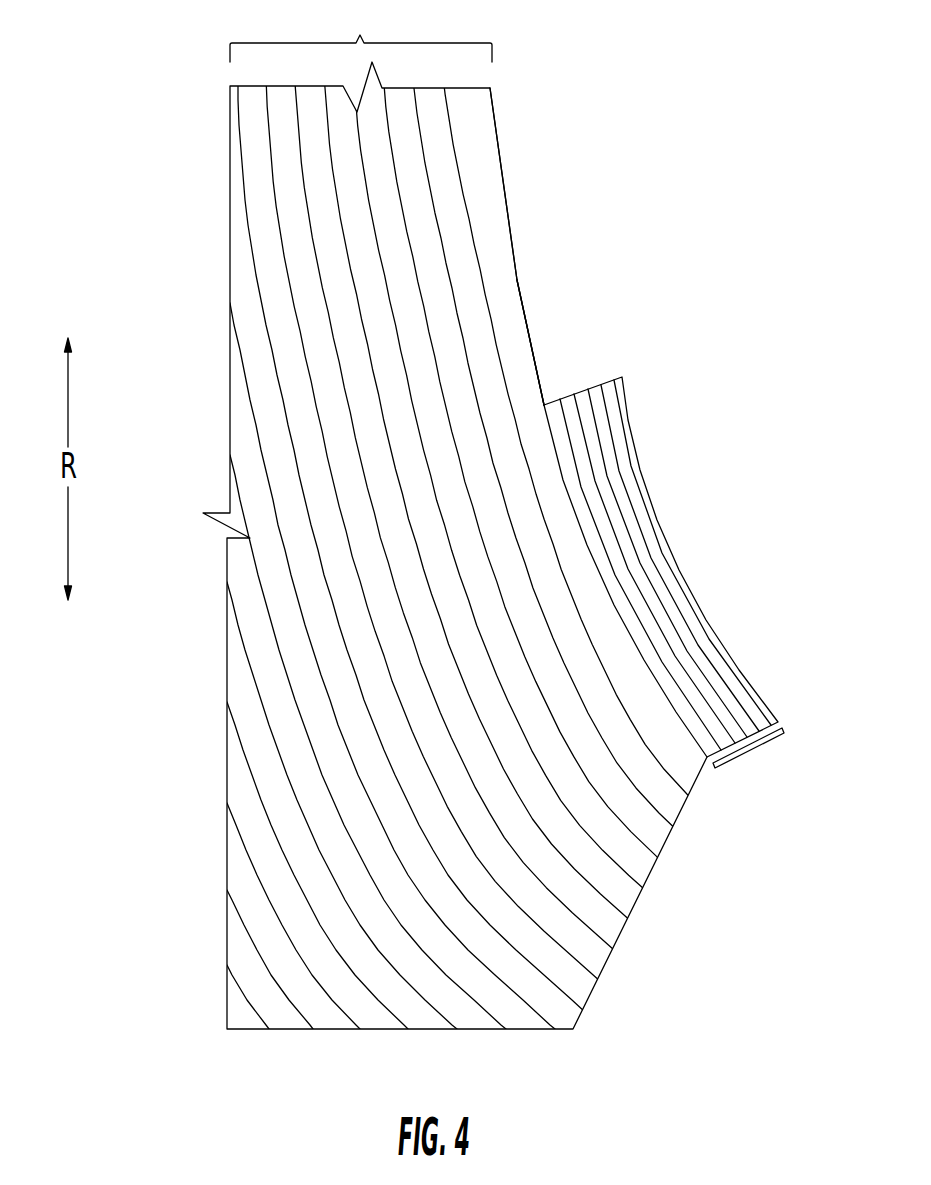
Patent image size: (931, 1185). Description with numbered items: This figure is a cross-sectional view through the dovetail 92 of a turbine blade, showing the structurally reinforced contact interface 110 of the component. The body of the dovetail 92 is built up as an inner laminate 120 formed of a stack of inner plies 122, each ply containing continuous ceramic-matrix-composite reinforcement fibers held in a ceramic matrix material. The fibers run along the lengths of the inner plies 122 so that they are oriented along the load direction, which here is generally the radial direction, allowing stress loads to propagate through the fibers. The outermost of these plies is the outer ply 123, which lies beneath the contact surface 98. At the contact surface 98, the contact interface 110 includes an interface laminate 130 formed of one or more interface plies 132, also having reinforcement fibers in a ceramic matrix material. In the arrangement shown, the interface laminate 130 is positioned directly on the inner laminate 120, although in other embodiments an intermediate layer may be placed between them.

The dovetail 92 is at (216, 228).
The inner laminate 120 is at (361, 31).
The inner plies 122 is at (455, 233).
The contact surface 98 is at (530, 288).
The outer ply 123 is at (524, 378).
The contact interface 110 is at (676, 548).
The interface plies 132 is at (692, 668).
The interface laminate 130 is at (748, 745).